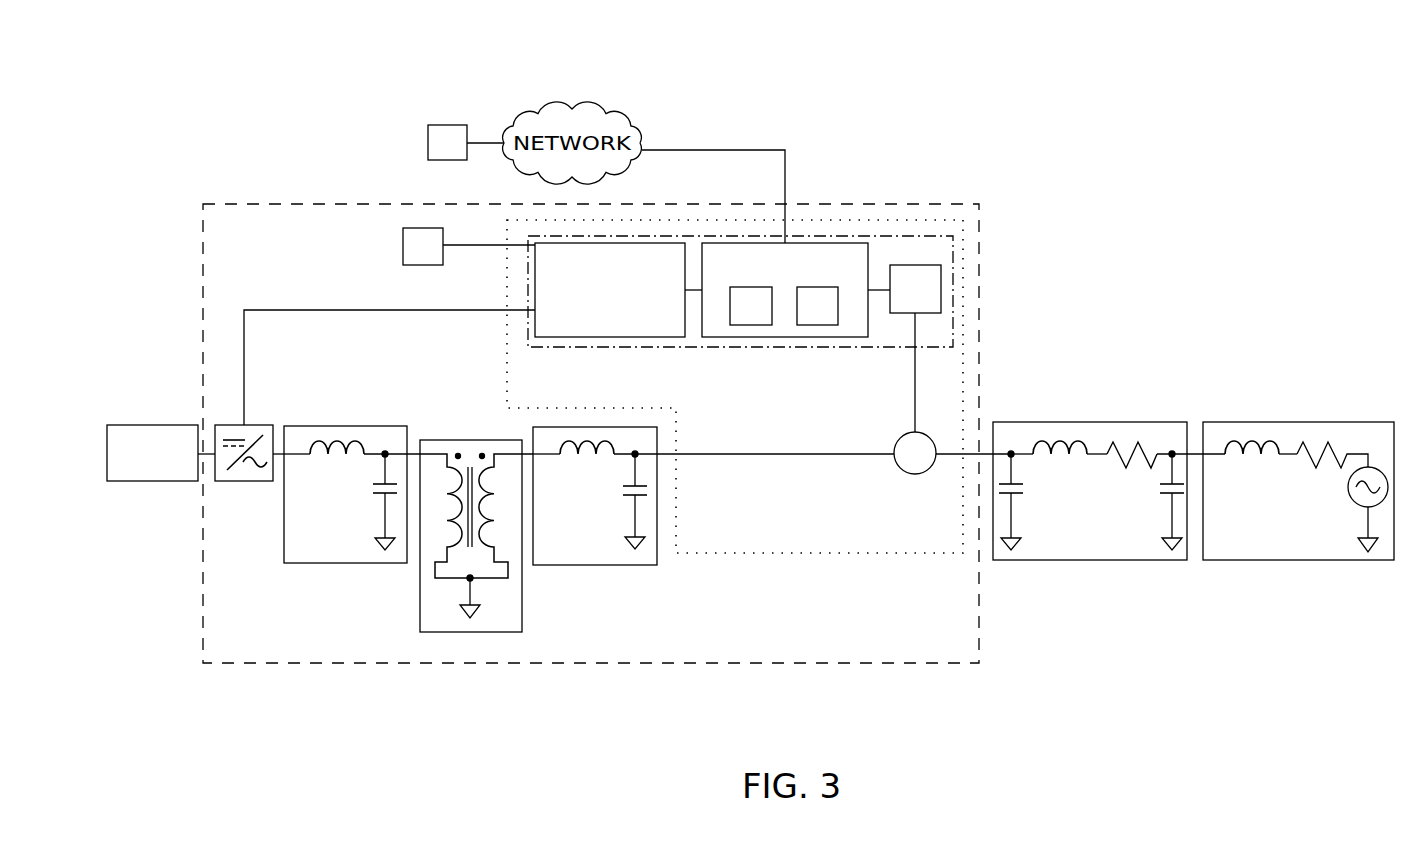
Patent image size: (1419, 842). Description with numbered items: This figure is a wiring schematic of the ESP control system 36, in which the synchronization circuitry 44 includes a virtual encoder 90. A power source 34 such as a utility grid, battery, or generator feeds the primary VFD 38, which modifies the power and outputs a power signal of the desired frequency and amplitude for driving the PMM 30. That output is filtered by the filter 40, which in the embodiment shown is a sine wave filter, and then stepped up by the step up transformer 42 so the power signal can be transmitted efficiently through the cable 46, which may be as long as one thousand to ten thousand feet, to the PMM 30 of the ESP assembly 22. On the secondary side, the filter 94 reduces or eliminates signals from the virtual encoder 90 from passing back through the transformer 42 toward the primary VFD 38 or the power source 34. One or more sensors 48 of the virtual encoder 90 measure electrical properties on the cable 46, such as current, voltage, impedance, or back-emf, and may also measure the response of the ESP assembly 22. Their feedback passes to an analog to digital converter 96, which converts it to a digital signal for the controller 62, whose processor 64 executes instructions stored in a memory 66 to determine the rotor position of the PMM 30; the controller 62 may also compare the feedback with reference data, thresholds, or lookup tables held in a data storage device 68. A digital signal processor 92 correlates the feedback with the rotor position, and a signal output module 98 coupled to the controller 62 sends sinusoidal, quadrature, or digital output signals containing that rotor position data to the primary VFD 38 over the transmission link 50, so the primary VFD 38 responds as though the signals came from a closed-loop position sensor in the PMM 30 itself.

The ESP assembly 22 is at (1393, 573).
The PMM 30 is at (1300, 422).
The power source 34 is at (150, 425).
The ESP control system 36 is at (239, 204).
The primary VFD 38 is at (243, 481).
The filter 40 is at (352, 461).
The step up transformer 42 is at (470, 440).
The synchronization circuitry 44 is at (665, 590).
The cable 46 is at (1095, 422).
The sensors 48 is at (915, 475).
The transmission link 50 is at (282, 310).
The controller 62 is at (819, 240).
The processor 64 is at (750, 325).
The memory 66 is at (818, 325).
The data storage device 68 is at (427, 142).
The virtual encoder 90 is at (819, 554).
The digital signal processor 92 is at (938, 228).
The filter 94 is at (713, 529).
The analog to digital converter 96 is at (913, 265).
The signal output module 98 is at (527, 283).